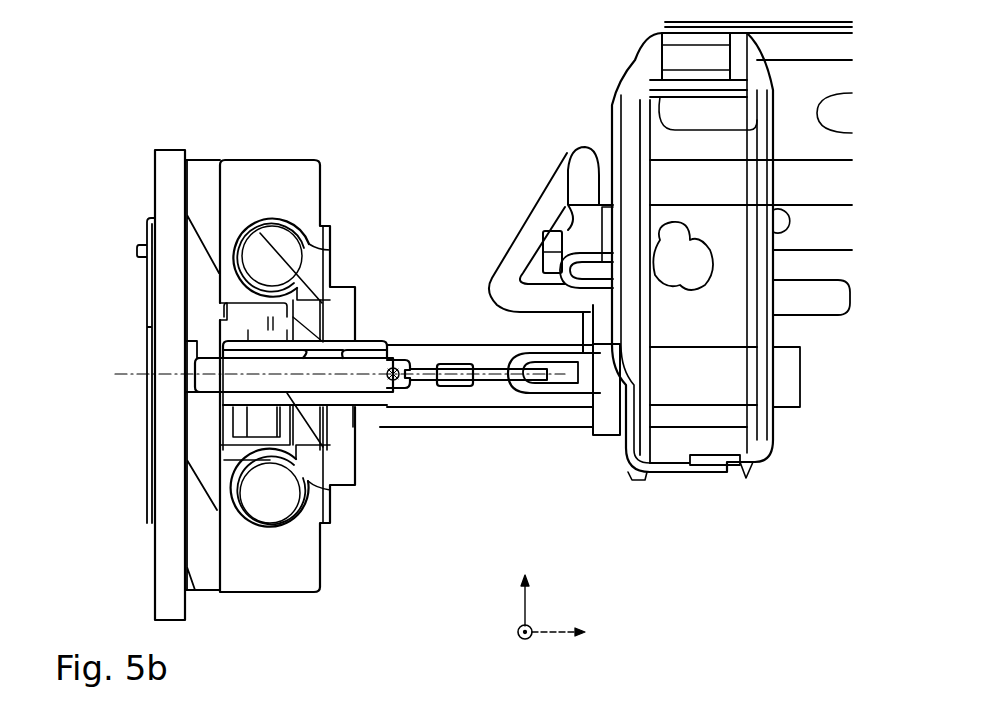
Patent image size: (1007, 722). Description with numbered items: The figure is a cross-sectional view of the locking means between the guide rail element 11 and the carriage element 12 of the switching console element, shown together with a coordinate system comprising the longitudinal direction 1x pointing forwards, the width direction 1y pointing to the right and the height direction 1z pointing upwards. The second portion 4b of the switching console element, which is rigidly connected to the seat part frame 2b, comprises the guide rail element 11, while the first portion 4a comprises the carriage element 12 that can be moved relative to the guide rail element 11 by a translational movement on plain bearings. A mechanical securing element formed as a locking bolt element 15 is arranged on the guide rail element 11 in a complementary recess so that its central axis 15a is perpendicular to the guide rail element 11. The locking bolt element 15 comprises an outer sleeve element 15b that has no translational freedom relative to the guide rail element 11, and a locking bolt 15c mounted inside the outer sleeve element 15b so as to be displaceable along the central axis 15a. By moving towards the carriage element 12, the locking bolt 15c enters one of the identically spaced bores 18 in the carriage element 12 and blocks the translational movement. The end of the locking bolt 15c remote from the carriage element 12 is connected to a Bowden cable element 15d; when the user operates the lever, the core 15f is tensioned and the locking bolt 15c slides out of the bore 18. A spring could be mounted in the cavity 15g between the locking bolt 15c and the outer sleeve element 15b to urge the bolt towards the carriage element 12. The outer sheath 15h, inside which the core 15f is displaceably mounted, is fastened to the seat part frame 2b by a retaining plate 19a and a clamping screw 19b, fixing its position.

The first portion of the switching console element 4a is at (178, 127).
The second portion of the switching console element 4b is at (338, 230).
The carriage element 12 is at (298, 172).
The guide rail element 11 is at (318, 266).
The locking bolt element 15 is at (392, 262).
The central axis of the locking bolt element 15a is at (484, 390).
The outer sleeve element 15b is at (378, 345).
The locking bolt 15c is at (378, 395).
The Bowden cable element 15d is at (498, 388).
The core of the Bowden cable element 15f is at (499, 362).
The cavity 15g is at (378, 395).
The outer sheath of the Bowden cable element 15h is at (550, 200).
The bores 18 is at (203, 345).
The retaining plate 19a is at (572, 170).
The clamping screw 19b is at (541, 245).
The seat part frame 2b is at (688, 56).
The longitudinal direction 1x is at (520, 641).
The width direction 1y is at (544, 631).
The height direction 1z is at (523, 606).